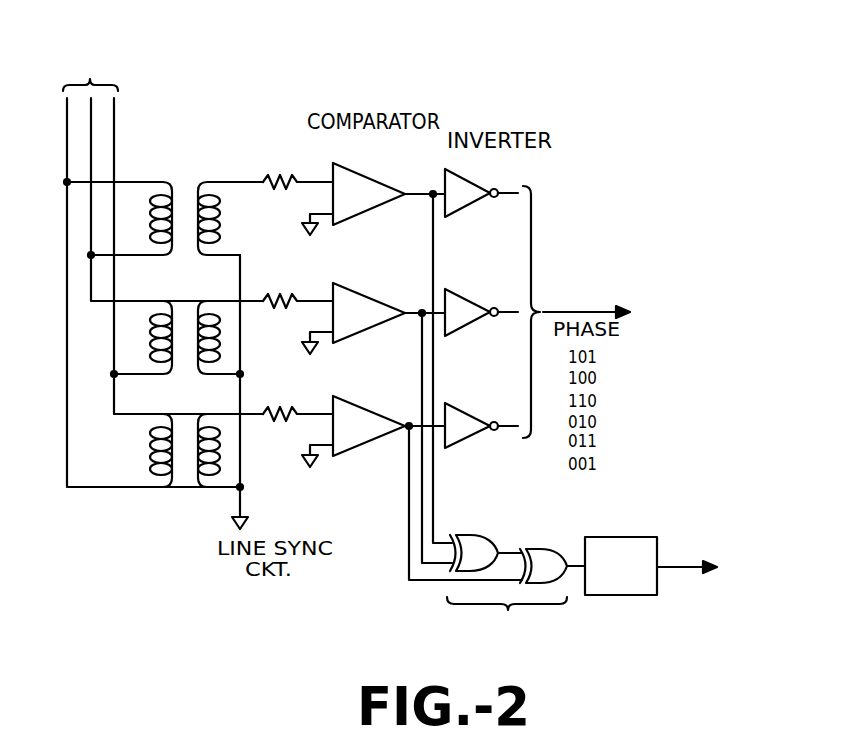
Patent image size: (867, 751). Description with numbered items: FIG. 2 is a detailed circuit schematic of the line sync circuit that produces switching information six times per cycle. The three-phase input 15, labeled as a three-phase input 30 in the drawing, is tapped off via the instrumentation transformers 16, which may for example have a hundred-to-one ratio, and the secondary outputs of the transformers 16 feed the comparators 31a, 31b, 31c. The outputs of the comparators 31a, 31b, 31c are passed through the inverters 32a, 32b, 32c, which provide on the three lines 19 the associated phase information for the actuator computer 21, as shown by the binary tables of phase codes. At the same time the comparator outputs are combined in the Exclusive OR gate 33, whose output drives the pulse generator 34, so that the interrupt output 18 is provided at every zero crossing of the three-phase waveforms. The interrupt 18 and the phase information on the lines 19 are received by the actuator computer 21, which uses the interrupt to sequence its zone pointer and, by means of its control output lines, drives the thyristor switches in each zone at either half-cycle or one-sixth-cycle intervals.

The three-phase input 15 is at (102, 133).
The three-phase input 30 is at (96, 58).
The instrumentation transformer 16 is at (180, 183).
The comparator 31a is at (368, 176).
The comparator 31b is at (378, 326).
The comparator 31c is at (378, 440).
The inverter 32a is at (467, 180).
The inverter 32b is at (471, 299).
The inverter 32c is at (476, 416).
The lines 19 is at (585, 311).
The actuator computer 21 is at (707, 320).
The Exclusive OR gate 33 is at (497, 425).
The pulse generator 34 is at (625, 596).
The interrupt output 18 is at (665, 569).